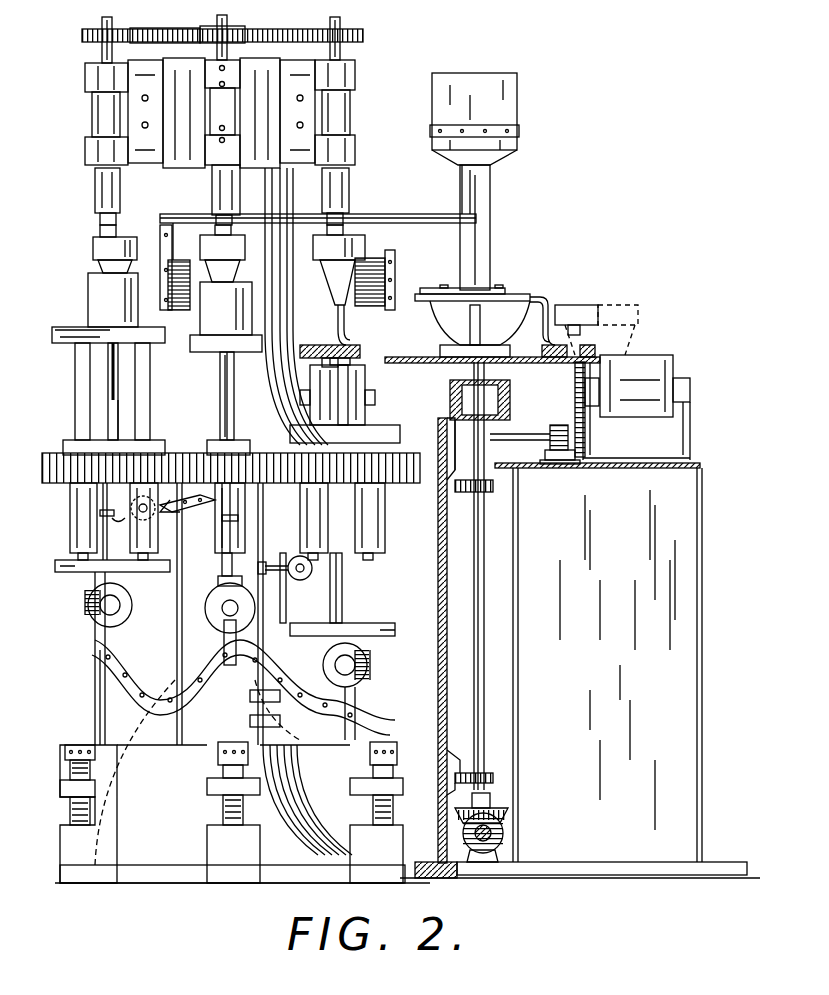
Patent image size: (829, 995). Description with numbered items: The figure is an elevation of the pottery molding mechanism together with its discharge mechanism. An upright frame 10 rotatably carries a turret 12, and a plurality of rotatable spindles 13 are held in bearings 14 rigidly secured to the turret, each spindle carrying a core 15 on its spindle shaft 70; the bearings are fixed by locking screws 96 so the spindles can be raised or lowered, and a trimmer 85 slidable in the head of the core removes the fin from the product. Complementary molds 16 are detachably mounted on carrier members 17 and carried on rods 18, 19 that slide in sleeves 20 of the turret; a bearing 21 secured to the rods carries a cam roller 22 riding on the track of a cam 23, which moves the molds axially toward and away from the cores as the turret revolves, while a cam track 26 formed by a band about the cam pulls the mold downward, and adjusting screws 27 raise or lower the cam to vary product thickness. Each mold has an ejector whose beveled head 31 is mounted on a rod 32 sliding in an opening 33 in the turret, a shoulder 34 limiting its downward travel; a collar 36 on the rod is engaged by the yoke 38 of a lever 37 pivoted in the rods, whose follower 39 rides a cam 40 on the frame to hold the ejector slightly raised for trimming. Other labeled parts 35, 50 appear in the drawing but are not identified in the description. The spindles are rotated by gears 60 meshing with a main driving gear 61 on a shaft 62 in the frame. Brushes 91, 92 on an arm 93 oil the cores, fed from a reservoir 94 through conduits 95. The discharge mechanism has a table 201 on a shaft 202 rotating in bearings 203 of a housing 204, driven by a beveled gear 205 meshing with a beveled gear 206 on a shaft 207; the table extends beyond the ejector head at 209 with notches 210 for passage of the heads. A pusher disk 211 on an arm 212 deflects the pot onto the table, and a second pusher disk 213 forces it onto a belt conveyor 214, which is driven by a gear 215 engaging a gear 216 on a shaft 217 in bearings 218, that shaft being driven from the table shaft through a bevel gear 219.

The upright frame 10 is at (180, 600).
The turret 12 is at (283, 292).
The rotatable spindle 13 is at (349, 175).
The bearing 14 is at (350, 78).
The core 15 is at (93, 246).
The mold 16 is at (88, 300).
The carrier member 17 is at (60, 343).
The rod 18 is at (75, 378).
The rod 19 is at (150, 378).
The sleeve 20 is at (388, 508).
The bearing 21 is at (60, 574).
The cam roller 22 is at (222, 590).
The cam 23 is at (95, 702).
The cam track 26 is at (70, 515).
The adjusting screw 27 is at (65, 748).
The ejector head 31 is at (322, 367).
The rod 32 is at (108, 385).
The opening 33 is at (222, 440).
The shoulder 34 is at (110, 400).
The collar 35 is at (229, 523).
The collar 36 is at (113, 521).
The lever 37 is at (155, 512).
The yoke 38 is at (116, 534).
The follower 39 is at (279, 556).
The cam 40 is at (200, 512).
The main gear 50 is at (60, 484).
The gear 60 is at (88, 36).
The main driving gear 61 is at (140, 30).
The shaft 62 is at (226, 22).
The spindle shaft 70 is at (102, 52).
The trimmer 85 is at (98, 268).
The brush 91 is at (165, 255).
The brush 92 is at (395, 268).
The arm 93 is at (400, 215).
The reservoir 94 is at (517, 110).
The conduit 95 is at (178, 216).
The locking screw 96 is at (238, 62).
The discharge table 201 is at (415, 357).
The shaft 202 is at (484, 518).
The bearing 203 is at (495, 488).
The housing 204 is at (518, 638).
The beveled gear 205 is at (508, 810).
The beveled gear 206 is at (503, 838).
The shaft 207 is at (503, 825).
The table extension 209 is at (345, 380).
The notch 210 is at (350, 365).
The pusher disk 211 is at (320, 345).
The arm 212 is at (338, 315).
The pusher disk 213 is at (542, 350).
The belt conveyor 214 is at (660, 355).
The gear 215 is at (575, 378).
The gear 216 is at (575, 420).
The shaft 217 is at (560, 425).
The bearing 218 is at (550, 452).
The bevel gear 219 is at (480, 430).